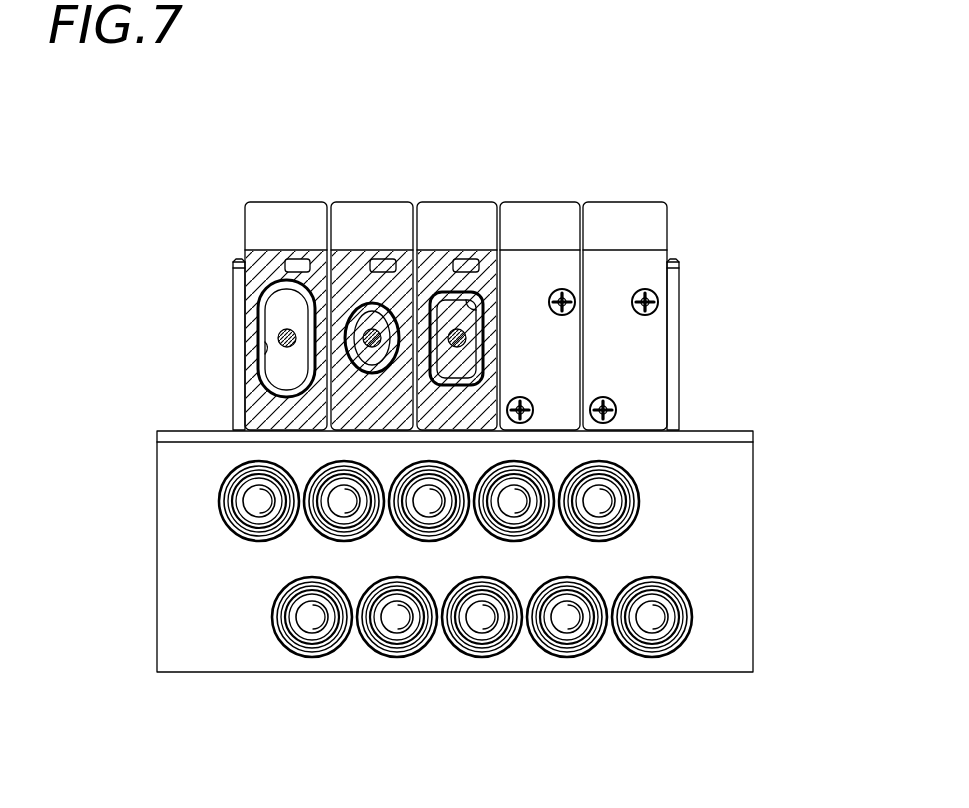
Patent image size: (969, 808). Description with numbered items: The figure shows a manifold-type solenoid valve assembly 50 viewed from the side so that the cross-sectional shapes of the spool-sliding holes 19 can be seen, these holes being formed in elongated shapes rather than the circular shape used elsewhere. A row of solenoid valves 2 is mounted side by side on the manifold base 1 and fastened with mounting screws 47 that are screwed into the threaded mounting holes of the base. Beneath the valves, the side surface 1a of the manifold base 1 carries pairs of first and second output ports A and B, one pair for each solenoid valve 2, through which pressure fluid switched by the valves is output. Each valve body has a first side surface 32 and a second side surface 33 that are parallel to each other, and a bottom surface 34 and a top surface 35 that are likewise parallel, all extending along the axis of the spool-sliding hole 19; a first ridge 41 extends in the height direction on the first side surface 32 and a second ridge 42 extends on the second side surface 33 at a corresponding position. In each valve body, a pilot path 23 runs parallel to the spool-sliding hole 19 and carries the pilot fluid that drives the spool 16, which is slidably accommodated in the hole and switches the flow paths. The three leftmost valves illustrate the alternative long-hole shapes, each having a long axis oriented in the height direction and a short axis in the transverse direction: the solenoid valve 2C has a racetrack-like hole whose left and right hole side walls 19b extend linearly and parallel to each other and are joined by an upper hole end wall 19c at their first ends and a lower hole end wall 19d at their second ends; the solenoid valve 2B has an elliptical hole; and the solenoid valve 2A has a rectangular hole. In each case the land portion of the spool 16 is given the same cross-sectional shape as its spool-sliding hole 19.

The manifold base 1 is at (509, 565).
The side surface 1a is at (218, 642).
The solenoid valve 2 is at (684, 202).
The solenoid valve 2A is at (466, 184).
The solenoid valve 2B is at (376, 164).
The solenoid valve 2C is at (447, 308).
The spool 16 is at (387, 327).
The spool-sliding hole 19 is at (282, 287).
The hole side walls 19b is at (283, 390).
The upper hole end wall 19c is at (245, 252).
The lower hole end wall 19d is at (282, 398).
The pilot path 23 is at (293, 265).
The first side surface 32 is at (262, 345).
The second side surface 33 is at (675, 315).
The bottom surface 34 is at (648, 432).
The top surface 35 is at (262, 292).
The first ridge 41 is at (242, 295).
The second ridge 42 is at (672, 275).
The mounting screws 47 is at (233, 261).
The manifold-type solenoid valve assembly 50 is at (661, 146).
The first output port A is at (607, 503).
The second output port B is at (655, 615).